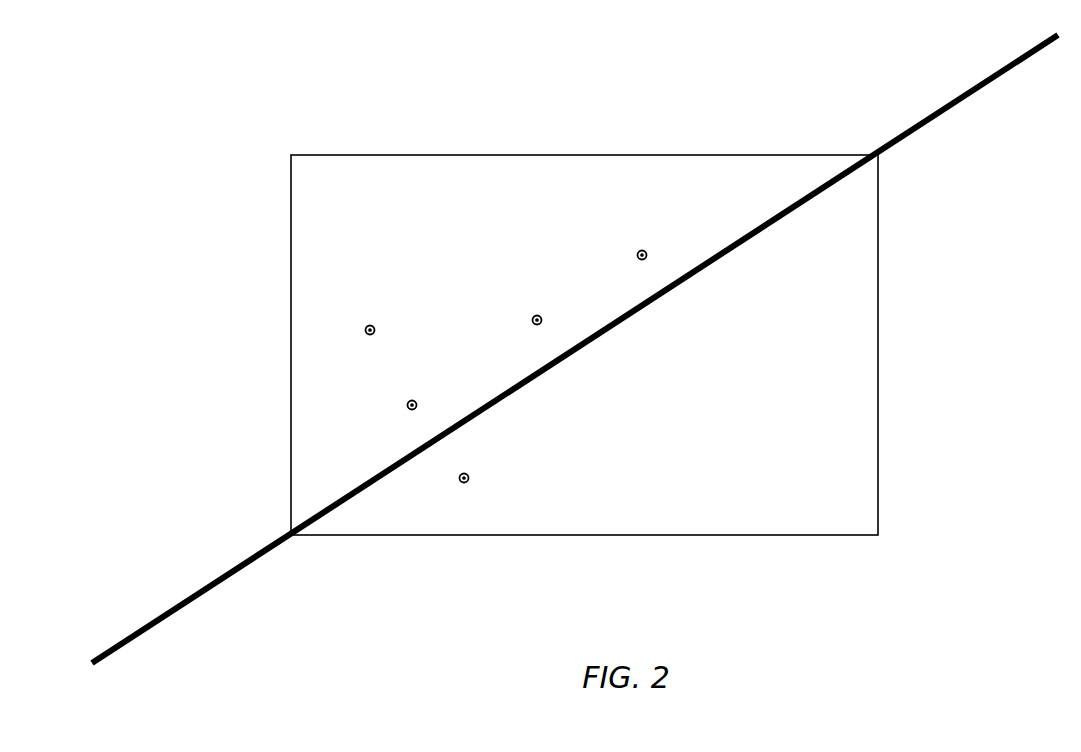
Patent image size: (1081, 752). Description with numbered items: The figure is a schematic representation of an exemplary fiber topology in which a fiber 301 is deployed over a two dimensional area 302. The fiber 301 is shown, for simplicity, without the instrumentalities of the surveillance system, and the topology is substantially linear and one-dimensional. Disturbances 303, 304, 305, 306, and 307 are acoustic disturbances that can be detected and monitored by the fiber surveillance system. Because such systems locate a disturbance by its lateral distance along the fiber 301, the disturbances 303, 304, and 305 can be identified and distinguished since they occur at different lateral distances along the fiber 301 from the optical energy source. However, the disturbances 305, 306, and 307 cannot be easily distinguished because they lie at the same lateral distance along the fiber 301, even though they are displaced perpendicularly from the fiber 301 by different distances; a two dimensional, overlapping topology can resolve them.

The fiber 301 is at (980, 90).
The two dimensional area 302 is at (878, 528).
The disturbance 303 is at (663, 244).
The disturbance 304 is at (548, 308).
The disturbance 305 is at (422, 393).
The disturbance 306 is at (360, 319).
The disturbance 307 is at (473, 493).